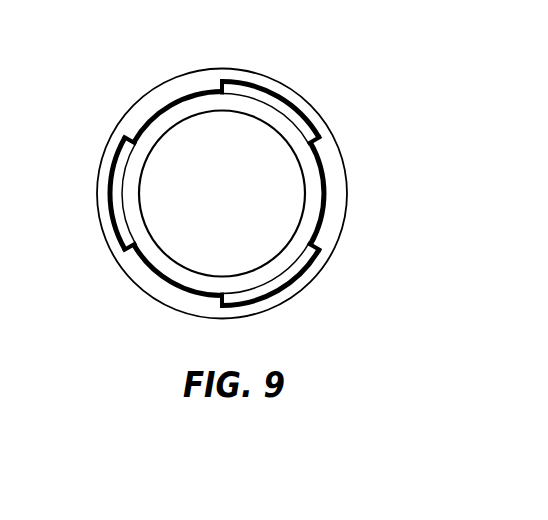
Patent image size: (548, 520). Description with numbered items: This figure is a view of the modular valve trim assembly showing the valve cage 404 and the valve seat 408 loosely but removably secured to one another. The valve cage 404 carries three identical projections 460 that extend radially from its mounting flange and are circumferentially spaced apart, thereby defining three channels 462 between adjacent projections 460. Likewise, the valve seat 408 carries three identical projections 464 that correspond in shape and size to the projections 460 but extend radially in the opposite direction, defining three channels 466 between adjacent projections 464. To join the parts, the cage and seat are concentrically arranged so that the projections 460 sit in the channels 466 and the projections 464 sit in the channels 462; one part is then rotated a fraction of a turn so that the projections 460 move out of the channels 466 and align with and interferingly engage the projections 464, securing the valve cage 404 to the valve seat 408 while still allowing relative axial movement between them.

The valve seat 408 is at (349, 137).
The valve cage 404 is at (292, 166).
The projections 460 is at (278, 157).
The projections 464 is at (173, 88).
The channels 462 is at (184, 189).
The channels 466 is at (273, 103).